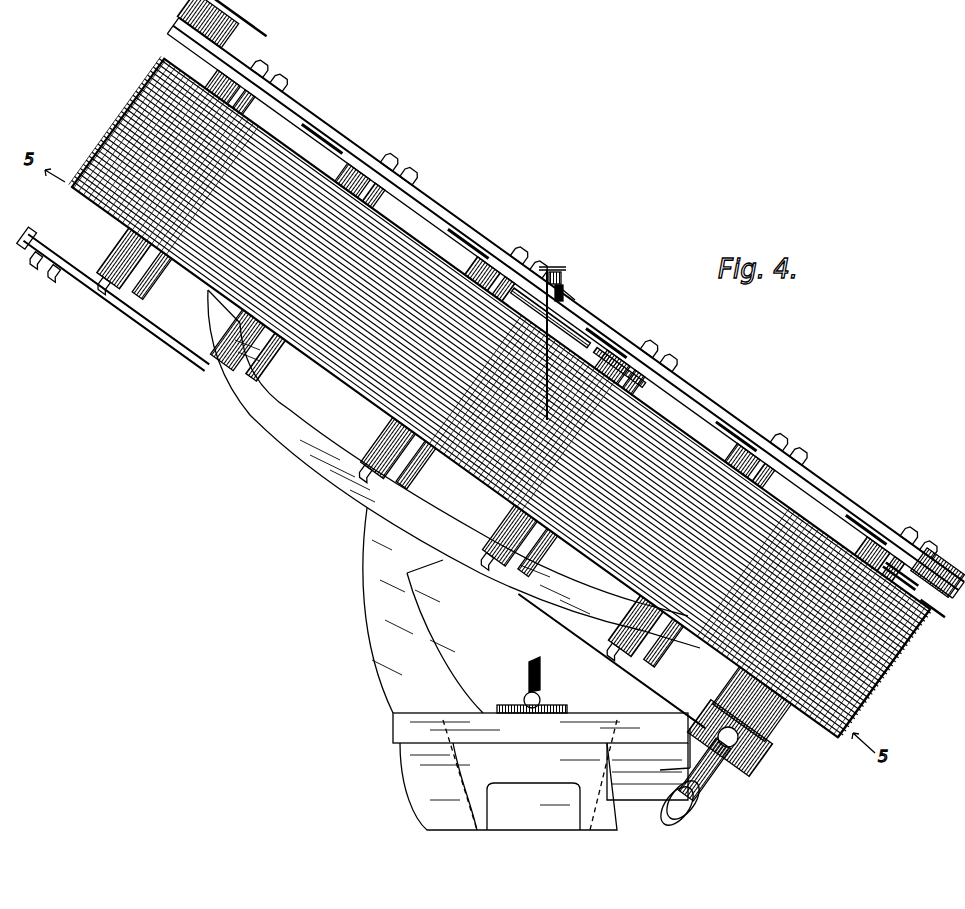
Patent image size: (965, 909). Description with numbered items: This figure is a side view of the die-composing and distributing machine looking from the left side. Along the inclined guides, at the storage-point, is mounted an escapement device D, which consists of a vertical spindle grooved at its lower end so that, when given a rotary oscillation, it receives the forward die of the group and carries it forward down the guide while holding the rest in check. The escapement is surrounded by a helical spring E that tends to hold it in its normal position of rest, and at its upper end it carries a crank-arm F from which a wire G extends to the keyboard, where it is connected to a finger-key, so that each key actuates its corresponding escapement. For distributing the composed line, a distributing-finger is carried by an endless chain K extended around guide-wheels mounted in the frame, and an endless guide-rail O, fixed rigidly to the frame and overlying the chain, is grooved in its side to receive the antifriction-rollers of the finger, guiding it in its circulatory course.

The endless chain K is at (214, 50).
The endless guide-rail O is at (323, 118).
The crank-arm F is at (550, 270).
The helical spring E is at (565, 291).
The wire G is at (590, 323).
The escapement device D is at (490, 560).